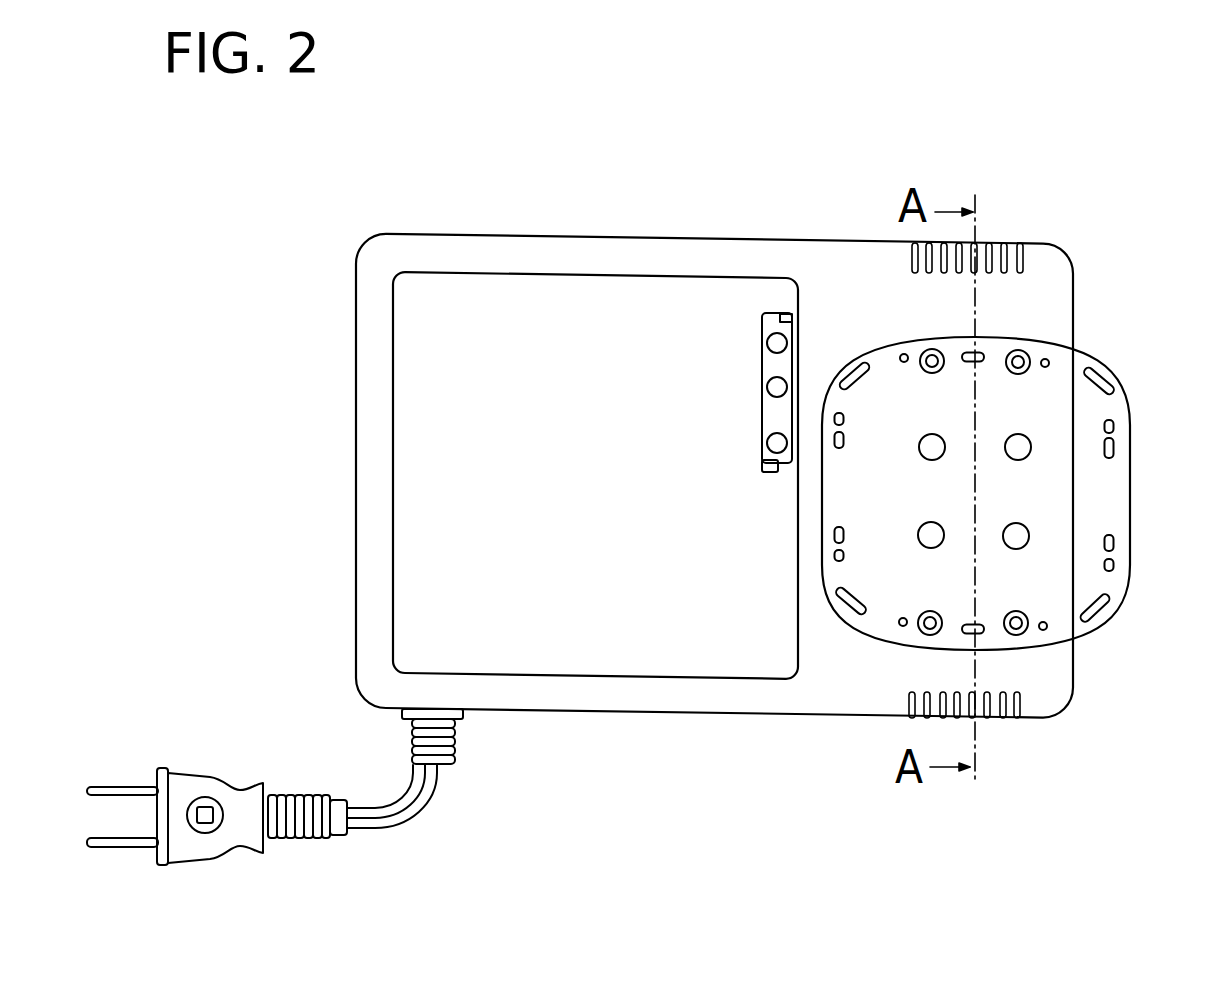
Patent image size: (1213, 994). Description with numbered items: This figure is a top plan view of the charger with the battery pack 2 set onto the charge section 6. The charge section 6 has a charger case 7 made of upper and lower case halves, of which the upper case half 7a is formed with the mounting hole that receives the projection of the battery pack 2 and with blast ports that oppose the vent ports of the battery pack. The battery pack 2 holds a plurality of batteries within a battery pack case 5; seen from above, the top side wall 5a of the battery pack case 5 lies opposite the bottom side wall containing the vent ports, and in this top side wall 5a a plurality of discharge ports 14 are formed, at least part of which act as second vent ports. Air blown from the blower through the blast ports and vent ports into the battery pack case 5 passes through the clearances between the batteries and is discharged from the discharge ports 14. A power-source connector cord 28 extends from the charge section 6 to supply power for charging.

The battery pack 2 is at (1082, 573).
The battery pack case 5 is at (1075, 508).
The top side wall 5a is at (1072, 485).
The charge section 6 is at (593, 242).
The charger case 7 is at (513, 258).
The upper case half 7a is at (698, 262).
The discharge ports 14 is at (925, 438).
The power-source connector cord 28 is at (232, 808).